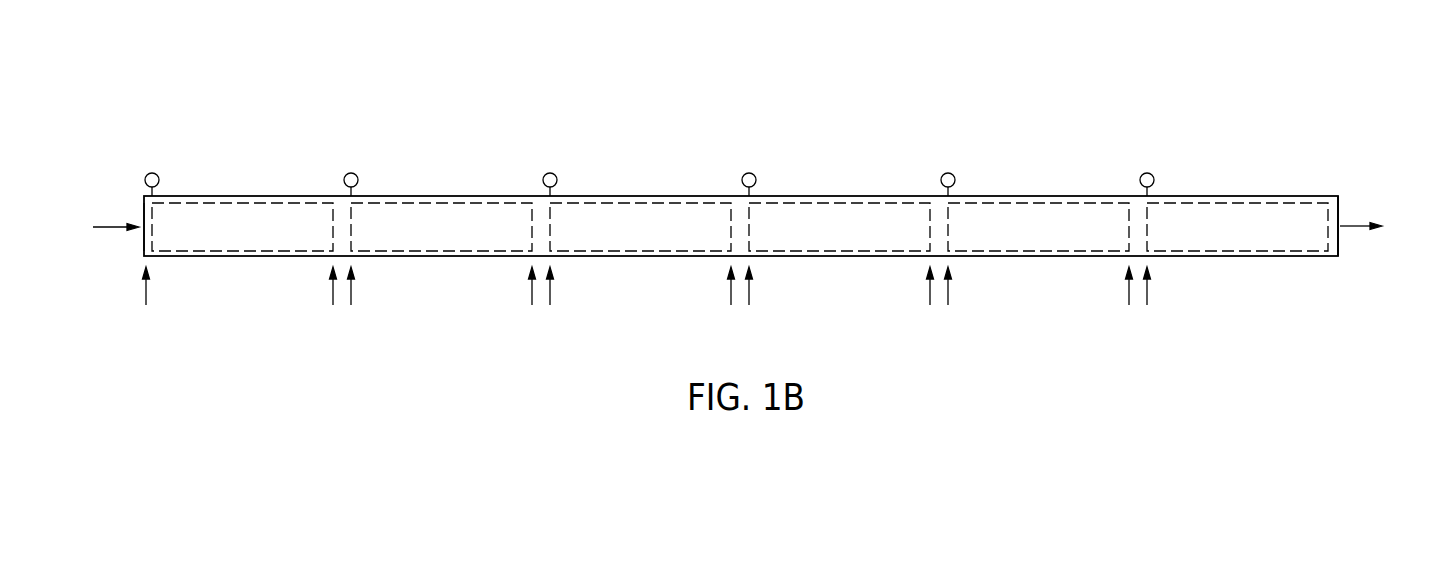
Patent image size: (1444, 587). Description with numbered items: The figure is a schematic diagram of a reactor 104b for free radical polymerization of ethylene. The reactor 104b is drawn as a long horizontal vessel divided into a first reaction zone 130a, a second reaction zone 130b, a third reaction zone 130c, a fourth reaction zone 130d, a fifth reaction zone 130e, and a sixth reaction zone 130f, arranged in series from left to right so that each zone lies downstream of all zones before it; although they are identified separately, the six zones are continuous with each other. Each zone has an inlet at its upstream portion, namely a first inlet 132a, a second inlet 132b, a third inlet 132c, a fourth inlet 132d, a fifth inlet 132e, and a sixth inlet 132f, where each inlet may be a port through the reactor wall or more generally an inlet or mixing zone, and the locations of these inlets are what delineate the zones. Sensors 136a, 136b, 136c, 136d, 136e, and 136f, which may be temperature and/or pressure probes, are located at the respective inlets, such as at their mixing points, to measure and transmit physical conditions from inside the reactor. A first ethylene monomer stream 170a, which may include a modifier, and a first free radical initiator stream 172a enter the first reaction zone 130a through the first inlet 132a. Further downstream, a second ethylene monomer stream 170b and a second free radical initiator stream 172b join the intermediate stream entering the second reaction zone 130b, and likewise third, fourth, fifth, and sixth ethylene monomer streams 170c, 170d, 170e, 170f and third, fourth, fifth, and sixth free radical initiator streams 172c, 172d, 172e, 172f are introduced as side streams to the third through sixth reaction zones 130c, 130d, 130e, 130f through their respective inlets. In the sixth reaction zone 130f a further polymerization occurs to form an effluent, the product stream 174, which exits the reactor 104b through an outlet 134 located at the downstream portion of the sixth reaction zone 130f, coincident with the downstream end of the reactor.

The reactor 104b is at (1302, 117).
The first reaction zone 130a is at (265, 238).
The second reaction zone 130b is at (464, 238).
The third reaction zone 130c is at (663, 238).
The fourth reaction zone 130d is at (862, 238).
The fifth reaction zone 130e is at (1061, 238).
The sixth reaction zone 130f is at (1260, 238).
The first inlet 132a is at (147, 218).
The second inlet 132b is at (341, 223).
The third inlet 132c is at (540, 223).
The fourth inlet 132d is at (739, 223).
The fifth inlet 132e is at (938, 223).
The sixth inlet 132f is at (1137, 223).
The sensor 136a is at (152, 173).
The sensor 136b is at (351, 173).
The sensor 136c is at (550, 173).
The sensor 136d is at (749, 173).
The sensor 136e is at (948, 173).
The sensor 136f is at (1147, 173).
The outlet 134 is at (1336, 207).
The first ethylene monomer stream 170a is at (93, 226).
The second ethylene monomer stream 170b is at (312, 302).
The third ethylene monomer stream 170c is at (511, 302).
The fourth ethylene monomer stream 170d is at (710, 302).
The fifth ethylene monomer stream 170e is at (909, 302).
The sixth ethylene monomer stream 170f is at (1108, 302).
The first free radical initiator stream 172a is at (147, 302).
The second free radical initiator stream 172b is at (371, 302).
The third free radical initiator stream 172c is at (570, 302).
The fourth free radical initiator stream 172d is at (769, 302).
The fifth free radical initiator stream 172e is at (968, 302).
The sixth free radical initiator stream 172f is at (1167, 302).
The product stream 174 is at (1380, 230).